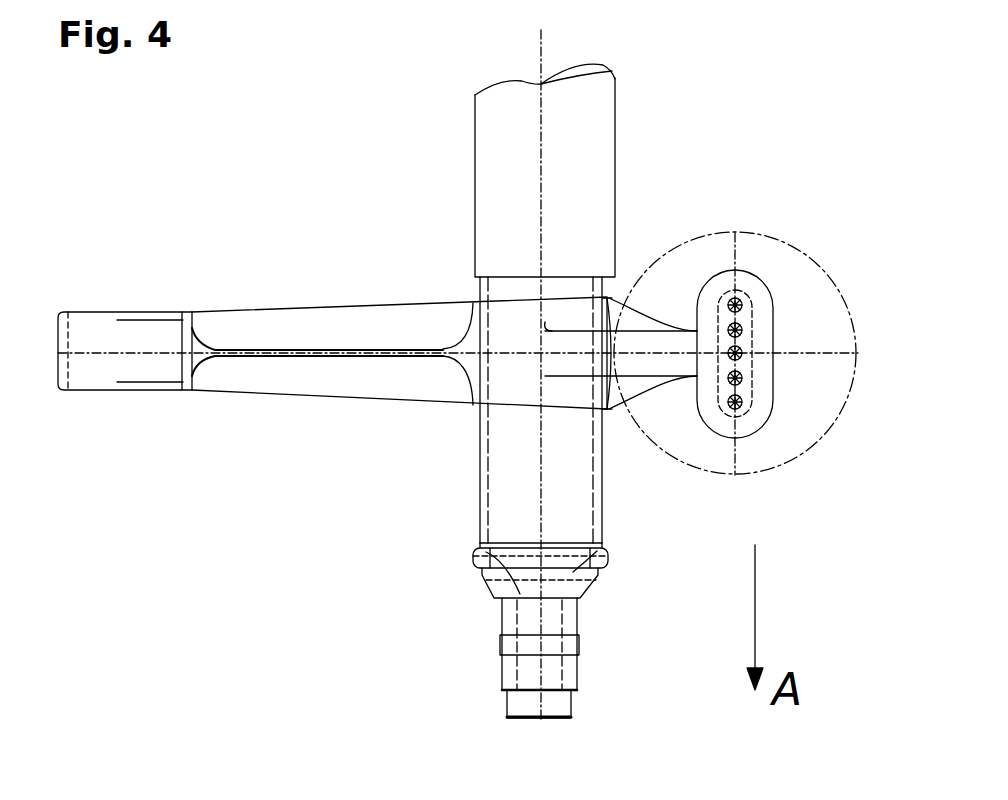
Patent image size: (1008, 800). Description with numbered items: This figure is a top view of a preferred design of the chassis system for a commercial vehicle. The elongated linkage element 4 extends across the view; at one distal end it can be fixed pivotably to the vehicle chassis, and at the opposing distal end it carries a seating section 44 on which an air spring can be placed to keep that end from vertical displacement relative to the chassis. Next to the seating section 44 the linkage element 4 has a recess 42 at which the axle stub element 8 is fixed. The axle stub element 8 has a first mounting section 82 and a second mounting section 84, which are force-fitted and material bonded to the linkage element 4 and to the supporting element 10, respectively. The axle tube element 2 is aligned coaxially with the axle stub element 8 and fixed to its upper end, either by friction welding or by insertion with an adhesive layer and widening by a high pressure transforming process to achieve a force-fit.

The axle tube element 2 is at (517, 123).
The linkage element 4 is at (352, 377).
The axle stub element 8 is at (490, 482).
The supporting element 10 is at (604, 555).
The recess 42 is at (605, 412).
The seating section 44 is at (760, 408).
The first mounting section 82 is at (484, 380).
The second mounting section 84 is at (486, 568).